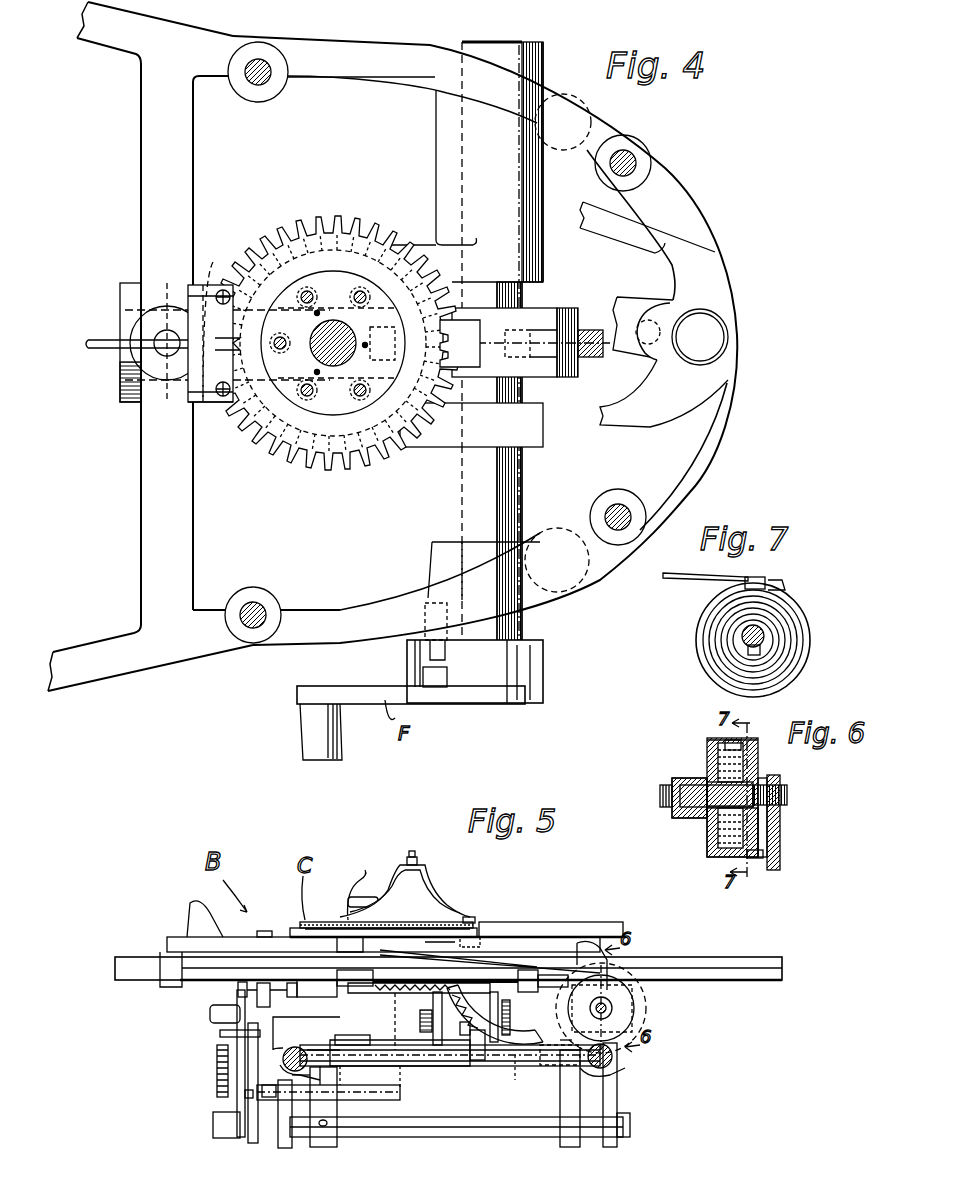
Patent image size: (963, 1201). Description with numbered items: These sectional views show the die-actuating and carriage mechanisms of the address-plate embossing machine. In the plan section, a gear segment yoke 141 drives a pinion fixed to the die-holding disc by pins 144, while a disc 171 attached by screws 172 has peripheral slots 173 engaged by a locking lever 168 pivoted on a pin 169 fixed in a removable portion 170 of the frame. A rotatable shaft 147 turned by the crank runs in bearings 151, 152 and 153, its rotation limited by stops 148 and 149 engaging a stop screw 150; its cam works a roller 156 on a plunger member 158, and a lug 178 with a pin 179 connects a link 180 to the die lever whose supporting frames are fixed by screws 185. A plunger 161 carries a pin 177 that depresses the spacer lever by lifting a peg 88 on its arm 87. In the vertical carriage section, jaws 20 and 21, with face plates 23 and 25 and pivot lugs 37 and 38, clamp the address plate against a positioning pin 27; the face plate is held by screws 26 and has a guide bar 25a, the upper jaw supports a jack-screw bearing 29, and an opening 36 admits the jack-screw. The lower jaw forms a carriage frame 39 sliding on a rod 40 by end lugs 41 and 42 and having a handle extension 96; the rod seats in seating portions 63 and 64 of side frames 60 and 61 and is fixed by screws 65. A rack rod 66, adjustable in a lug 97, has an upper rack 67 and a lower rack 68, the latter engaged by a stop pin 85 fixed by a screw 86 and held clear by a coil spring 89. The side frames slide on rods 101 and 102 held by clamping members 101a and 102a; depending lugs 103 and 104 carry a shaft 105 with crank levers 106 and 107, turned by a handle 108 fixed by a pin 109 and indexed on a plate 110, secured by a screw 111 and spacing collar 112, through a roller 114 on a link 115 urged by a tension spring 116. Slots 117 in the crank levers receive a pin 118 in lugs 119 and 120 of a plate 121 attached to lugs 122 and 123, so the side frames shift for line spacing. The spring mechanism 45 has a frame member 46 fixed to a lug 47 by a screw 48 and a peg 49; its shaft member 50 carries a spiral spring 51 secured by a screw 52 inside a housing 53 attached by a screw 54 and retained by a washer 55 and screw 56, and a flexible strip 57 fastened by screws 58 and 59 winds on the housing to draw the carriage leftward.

In FIG. 4, the gear segment yoke 141 is at (718, 282).
In FIG. 4, the screws 185 is at (623, 152).
In FIG. 4, the bearing 153 is at (500, 243).
In FIG. 4, the lug 178 is at (653, 314).
In FIG. 4, the link 180 is at (588, 358).
In FIG. 4, the pin 179 is at (535, 362).
In FIG. 4, the rotatable shaft 147 is at (503, 497).
In FIG. 4, the bearing 152 is at (480, 430).
In FIG. 4, the bearing 151 is at (463, 573).
In FIG. 4, the stop screw 150 is at (437, 653).
In FIG. 4, the stop 149 is at (430, 673).
In FIG. 4, the stop 148 is at (513, 662).
In FIG. 4, the disc 171 is at (323, 275).
In FIG. 4, the slots 173 is at (393, 235).
In FIG. 4, the screws 172 is at (317, 313).
In FIG. 4, the pins 144 is at (317, 372).
In FIG. 4, the roller 156 is at (416, 348).
In FIG. 4, the plunger member 158 is at (339, 374).
In FIG. 4, the plunger 161 is at (166, 392).
In FIG. 4, the pin 177 is at (105, 340).
In FIG. 4, the locking lever 168 is at (207, 317).
In FIG. 4, the pin 169 is at (220, 319).
In FIG. 4, the removable portion 170 is at (192, 387).
In FIG. 7, the housing member 53 is at (809, 614).
In FIG. 6, the housing member 53 is at (712, 750).
In FIG. 7, the spiral spring 51 is at (790, 652).
In FIG. 6, the spiral spring 51 is at (710, 838).
In FIG. 7, the shaft member 50 is at (745, 637).
In FIG. 6, the shaft member 50 is at (707, 782).
In FIG. 7, the screw 52 is at (760, 655).
In FIG. 6, the screw 52 is at (690, 818).
In FIG. 7, the flexible metallic strip 57 is at (685, 580).
In FIG. 6, the flexible metallic strip 57 is at (720, 740).
In FIG. 7, the screw 54 is at (758, 570).
In FIG. 6, the screw 54 is at (742, 745).
In FIG. 7, the screw 58 is at (785, 583).
In FIG. 6, the washer 55 is at (672, 780).
In FIG. 6, the screw 56 is at (660, 791).
In FIG. 6, the frame member 46 is at (762, 778).
In FIG. 6, the screw 48 is at (787, 793).
In FIG. 6, the lug 47 is at (780, 830).
In FIG. 5, the lug 47 is at (650, 1015).
In FIG. 6, the peg 49 is at (755, 858).
In FIG. 5, the peg 49 is at (630, 1030).
In FIG. 5, the rod 40 is at (738, 958).
In FIG. 5, the carriage frame 39 is at (250, 938).
In FIG. 5, the end lug 42 is at (170, 957).
In FIG. 5, the extension 96 is at (197, 910).
In FIG. 5, the screw 59 is at (290, 945).
In FIG. 5, the positioning pin 27 is at (300, 922).
In FIG. 5, the jaw member 21 is at (318, 922).
In FIG. 5, the screws 26 is at (345, 937).
In FIG. 5, the face plate 23 is at (366, 908).
In FIG. 5, the lug 38 is at (365, 888).
In FIG. 5, the jaw 20 is at (437, 907).
In FIG. 5, the jack-screw bearing 29 is at (415, 851).
In FIG. 5, the lug 37 is at (468, 916).
In FIG. 5, the opening 36 is at (475, 918).
In FIG. 5, the face plate 25 is at (450, 940).
In FIG. 5, the guide bar 25a is at (552, 930).
In FIG. 5, the end lug 41 is at (610, 955).
In FIG. 5, the spring mechanism 45 is at (625, 1005).
In FIG. 5, the side frame 61 is at (620, 1025).
In FIG. 5, the seating portion 64 is at (543, 982).
In FIG. 5, the seating portion 63 is at (355, 979).
In FIG. 5, the upper rack 67 is at (390, 990).
In FIG. 5, the peg 88 is at (446, 992).
In FIG. 5, the lug 97 is at (238, 989).
In FIG. 5, the handle 108 is at (210, 1013).
In FIG. 5, the roller 114 is at (220, 1033).
In FIG. 5, the link 115 is at (217, 1052).
In FIG. 5, the coiled tension spring 116 is at (217, 1076).
In FIG. 5, the screw 111 is at (238, 1108).
In FIG. 5, the pin 109 is at (225, 1140).
In FIG. 5, the plate 110 is at (251, 1143).
In FIG. 5, the spacing collar 112 is at (270, 1100).
In FIG. 5, the depending lug 103 is at (286, 1148).
In FIG. 5, the rod 101 is at (313, 1148).
In FIG. 5, the clamping member 101a is at (318, 1148).
In FIG. 5, the side frame 60 is at (306, 1048).
In FIG. 5, the crank lever 106 is at (330, 1140).
In FIG. 5, the shaft 105 is at (440, 1137).
In FIG. 5, the crank lever 107 is at (570, 1147).
In FIG. 5, the depending lug 104 is at (610, 1147).
In FIG. 5, the rod 102 is at (615, 1068).
In FIG. 5, the clamping member 102a is at (595, 1080).
In FIG. 5, the screws 65 is at (358, 993).
In FIG. 5, the lug 122 is at (363, 1022).
In FIG. 5, the rack rod 66 is at (397, 1005).
In FIG. 5, the lower rack 68 is at (418, 1029).
In FIG. 5, the slot 117 is at (451, 1020).
In FIG. 5, the coil spring 89 is at (420, 1066).
In FIG. 5, the plate 121 is at (423, 1085).
In FIG. 5, the pin 118 is at (366, 1085).
In FIG. 5, the lug 119 is at (344, 1086).
In FIG. 5, the screw 86 is at (470, 1060).
In FIG. 5, the stop pin 85 is at (480, 1066).
In FIG. 5, the arm 87 is at (500, 1060).
In FIG. 5, the lug 123 is at (508, 1083).
In FIG. 5, the lug 120 is at (552, 1068).